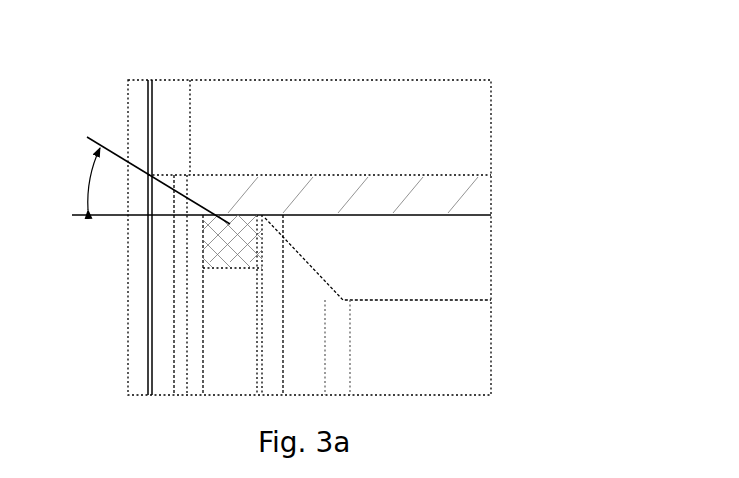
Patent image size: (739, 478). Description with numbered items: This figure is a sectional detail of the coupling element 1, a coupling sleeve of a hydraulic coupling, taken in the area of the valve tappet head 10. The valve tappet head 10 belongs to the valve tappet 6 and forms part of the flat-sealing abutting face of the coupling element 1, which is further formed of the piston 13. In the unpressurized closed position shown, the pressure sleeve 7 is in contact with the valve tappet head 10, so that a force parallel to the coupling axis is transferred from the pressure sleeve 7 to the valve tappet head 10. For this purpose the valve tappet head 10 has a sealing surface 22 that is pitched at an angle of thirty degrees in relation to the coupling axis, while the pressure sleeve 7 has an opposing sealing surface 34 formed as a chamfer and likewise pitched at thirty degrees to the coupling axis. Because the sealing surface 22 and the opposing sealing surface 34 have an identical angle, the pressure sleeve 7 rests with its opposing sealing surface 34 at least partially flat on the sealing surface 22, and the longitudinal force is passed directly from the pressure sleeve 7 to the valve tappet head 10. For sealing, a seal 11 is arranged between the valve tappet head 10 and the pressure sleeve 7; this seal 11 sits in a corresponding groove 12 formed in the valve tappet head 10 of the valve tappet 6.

The coupling element 1 is at (465, 147).
The valve tappet 6 is at (447, 352).
The pressure sleeve 7 is at (460, 192).
The valve tappet head 10 is at (162, 368).
The seal 11 is at (232, 234).
The groove 12 is at (232, 270).
The piston 13 is at (167, 115).
The sealing surface 22 is at (196, 213).
The opposing sealing surface 34 is at (199, 204).